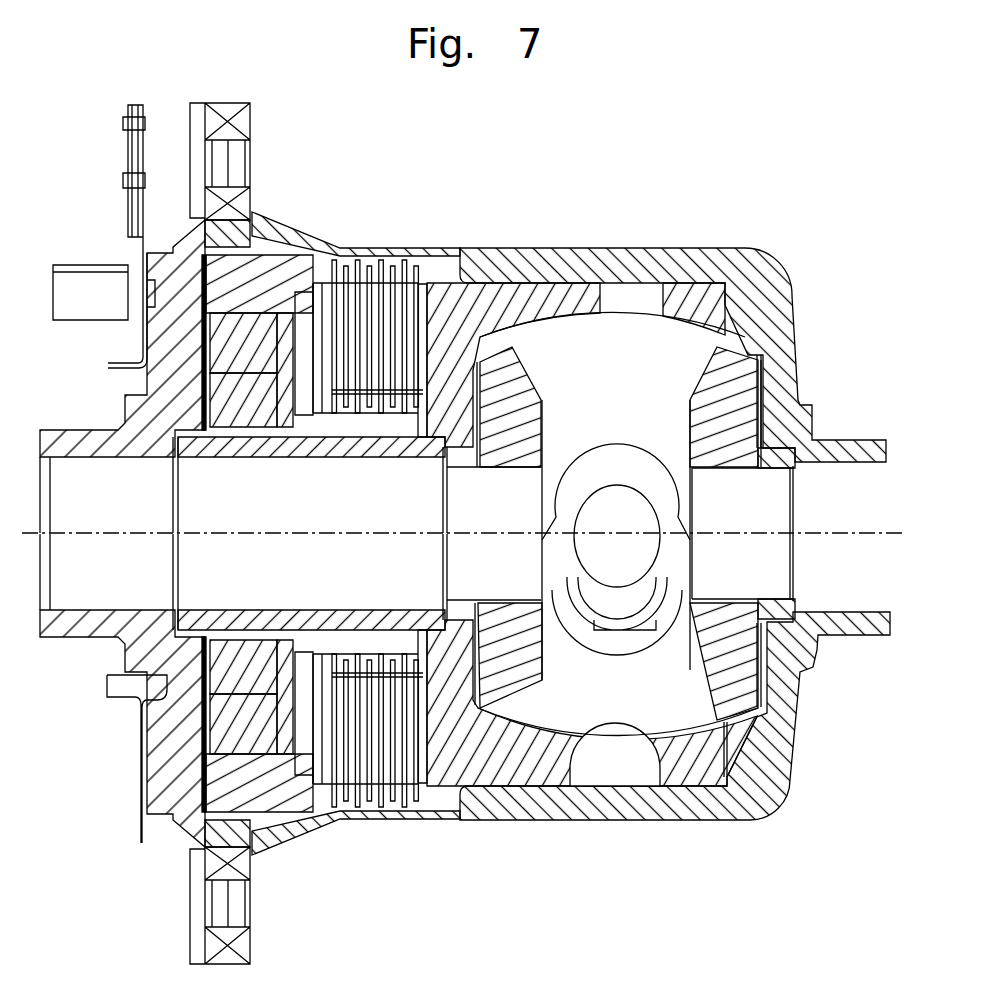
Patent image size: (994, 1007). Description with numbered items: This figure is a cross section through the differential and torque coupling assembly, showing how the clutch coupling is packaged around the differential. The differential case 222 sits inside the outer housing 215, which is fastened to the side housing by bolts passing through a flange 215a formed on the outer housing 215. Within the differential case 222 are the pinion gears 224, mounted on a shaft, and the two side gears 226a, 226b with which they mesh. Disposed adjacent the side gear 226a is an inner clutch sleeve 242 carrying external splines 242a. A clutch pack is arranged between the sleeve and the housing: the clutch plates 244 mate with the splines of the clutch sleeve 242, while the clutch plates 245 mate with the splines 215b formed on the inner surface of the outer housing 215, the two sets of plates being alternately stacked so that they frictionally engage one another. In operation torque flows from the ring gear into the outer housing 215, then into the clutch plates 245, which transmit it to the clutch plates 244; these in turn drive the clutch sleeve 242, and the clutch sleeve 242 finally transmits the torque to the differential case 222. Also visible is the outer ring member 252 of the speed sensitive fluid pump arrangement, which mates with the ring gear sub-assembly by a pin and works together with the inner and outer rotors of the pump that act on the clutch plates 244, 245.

The outer housing 215 is at (628, 262).
The flange 215a is at (245, 123).
The splines 215b is at (338, 262).
The differential case 222 is at (513, 337).
The pinion gears 224 is at (640, 711).
The side gear 226a is at (518, 377).
The side gear 226b is at (703, 414).
The inner clutch sleeve 242 is at (342, 440).
The external splines 242a is at (350, 456).
The clutch plates 244 is at (407, 425).
The clutch plates 245 is at (404, 262).
The outer ring member 252 is at (266, 272).